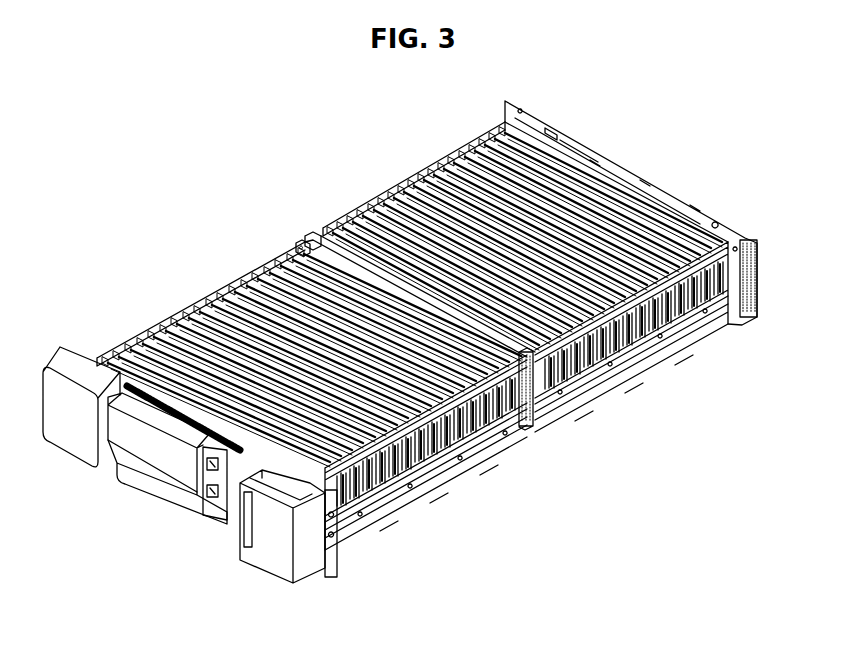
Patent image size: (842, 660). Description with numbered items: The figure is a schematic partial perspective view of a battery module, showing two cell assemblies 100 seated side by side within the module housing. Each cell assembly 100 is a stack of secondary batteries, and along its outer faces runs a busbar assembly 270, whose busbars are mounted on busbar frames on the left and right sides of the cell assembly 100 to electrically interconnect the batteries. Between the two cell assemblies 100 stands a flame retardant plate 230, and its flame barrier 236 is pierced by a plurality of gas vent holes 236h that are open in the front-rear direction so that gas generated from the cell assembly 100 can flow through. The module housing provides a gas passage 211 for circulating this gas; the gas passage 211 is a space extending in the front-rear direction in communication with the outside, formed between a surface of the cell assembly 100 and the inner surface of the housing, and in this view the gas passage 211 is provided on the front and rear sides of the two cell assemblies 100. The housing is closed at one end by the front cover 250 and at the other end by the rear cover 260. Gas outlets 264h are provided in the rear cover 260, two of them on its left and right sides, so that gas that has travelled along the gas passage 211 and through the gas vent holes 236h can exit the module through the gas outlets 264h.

The cell assembly 100 is at (413, 361).
The gas passage 211 is at (653, 330).
The flame retardant plate 230 is at (320, 236).
The flame barrier 236 is at (417, 346).
The gas vent holes 236h is at (300, 240).
The front cover 250 is at (332, 572).
The rear cover 260 is at (644, 213).
The gas outlets 264h is at (716, 190).
The busbar assembly 270 is at (605, 370).